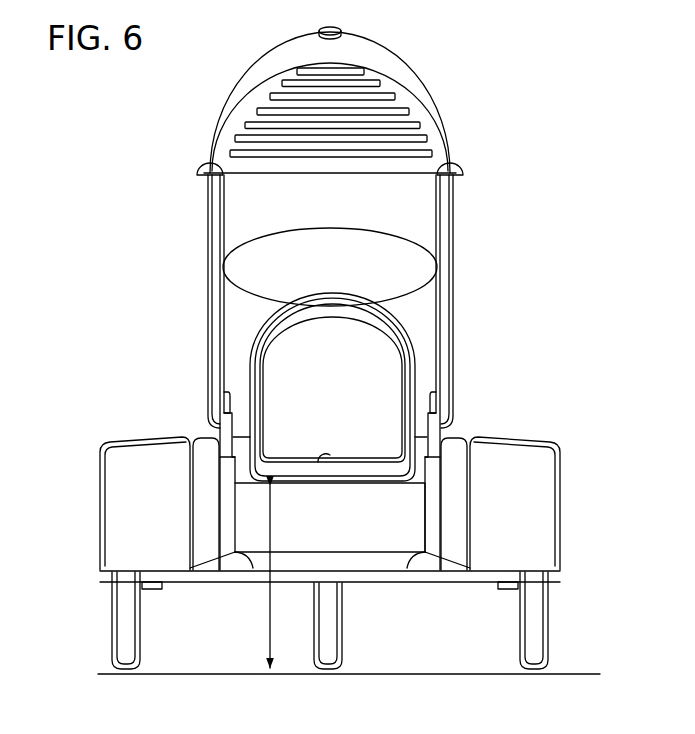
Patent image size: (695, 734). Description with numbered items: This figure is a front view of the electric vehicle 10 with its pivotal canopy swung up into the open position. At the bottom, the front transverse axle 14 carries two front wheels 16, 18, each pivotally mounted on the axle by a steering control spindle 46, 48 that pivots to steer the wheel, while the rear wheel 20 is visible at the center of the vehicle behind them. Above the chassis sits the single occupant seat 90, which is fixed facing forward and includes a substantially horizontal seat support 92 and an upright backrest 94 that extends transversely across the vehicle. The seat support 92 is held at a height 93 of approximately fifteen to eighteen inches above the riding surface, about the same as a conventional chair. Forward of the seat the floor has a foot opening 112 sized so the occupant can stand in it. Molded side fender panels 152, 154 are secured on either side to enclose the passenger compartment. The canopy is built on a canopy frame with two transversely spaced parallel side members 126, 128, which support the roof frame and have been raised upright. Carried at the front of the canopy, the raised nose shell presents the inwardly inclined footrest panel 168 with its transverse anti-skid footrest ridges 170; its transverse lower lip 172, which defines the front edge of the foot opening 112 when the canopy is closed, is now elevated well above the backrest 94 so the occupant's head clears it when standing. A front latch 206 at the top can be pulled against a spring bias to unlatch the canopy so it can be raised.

The electric vehicle 10 is at (139, 132).
The front transverse axle 14 is at (409, 585).
The front wheel 16 is at (111, 632).
The front wheel 18 is at (549, 628).
The rear wheel 20 is at (344, 631).
The steering control spindle 46 is at (154, 590).
The steering control spindle 48 is at (505, 594).
The single occupant seat 90 is at (405, 335).
The seat support 92 is at (318, 462).
The height 93 is at (270, 597).
The backrest 94 is at (345, 371).
The foot opening 112 is at (374, 552).
The canopy frame side member 126 is at (207, 232).
The canopy frame side member 128 is at (453, 229).
The side fender panel 152 is at (518, 455).
The side fender panel 154 is at (147, 455).
The footrest panel 168 is at (242, 112).
The anti-skid footrest ridges 170 is at (370, 82).
The lower lip 172 is at (335, 175).
The front latch 206 is at (338, 30).